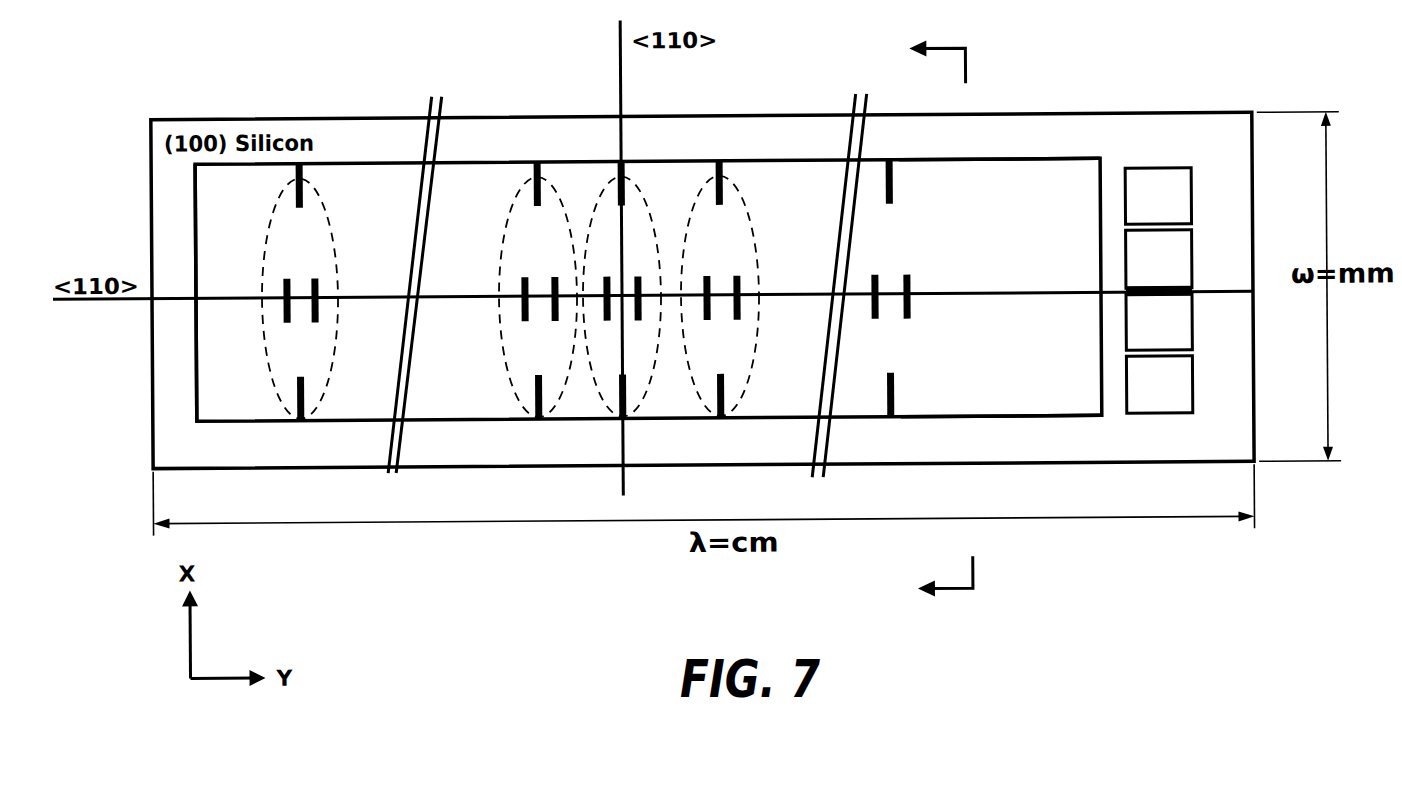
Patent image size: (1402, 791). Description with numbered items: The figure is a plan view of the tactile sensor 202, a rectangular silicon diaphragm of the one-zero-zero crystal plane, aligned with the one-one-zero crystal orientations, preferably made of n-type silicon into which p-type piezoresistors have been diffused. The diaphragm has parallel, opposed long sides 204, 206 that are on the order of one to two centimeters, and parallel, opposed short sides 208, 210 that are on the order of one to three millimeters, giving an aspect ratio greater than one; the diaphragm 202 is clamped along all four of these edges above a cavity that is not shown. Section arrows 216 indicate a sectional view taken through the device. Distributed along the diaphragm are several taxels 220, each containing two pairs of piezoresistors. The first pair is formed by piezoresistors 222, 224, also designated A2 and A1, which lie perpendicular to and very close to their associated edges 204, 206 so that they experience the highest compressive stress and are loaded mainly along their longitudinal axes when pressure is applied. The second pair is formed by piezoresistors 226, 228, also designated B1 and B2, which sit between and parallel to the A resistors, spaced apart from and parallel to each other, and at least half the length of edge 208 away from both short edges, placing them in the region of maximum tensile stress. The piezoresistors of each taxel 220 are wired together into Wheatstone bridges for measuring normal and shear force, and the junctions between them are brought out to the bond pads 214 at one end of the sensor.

The tactile sensor 202 is at (1126, 533).
The side 204 is at (949, 420).
The side 206 is at (1038, 161).
The side 208 is at (197, 381).
The side 210 is at (1022, 420).
The bond pads 214 is at (1192, 256).
The section line arrows 216 is at (942, 43).
The taxel 220 is at (271, 386).
The piezoresistor 222 is at (308, 406).
The piezoresistor 224 is at (307, 175).
The piezoresistor 226 is at (283, 307).
The piezoresistor 228 is at (322, 307).
The piezoresistor designation A1 is at (304, 181).
The piezoresistor designation A2 is at (308, 407).
The piezoresistor designation B1 is at (281, 279).
The piezoresistor designation B2 is at (320, 291).